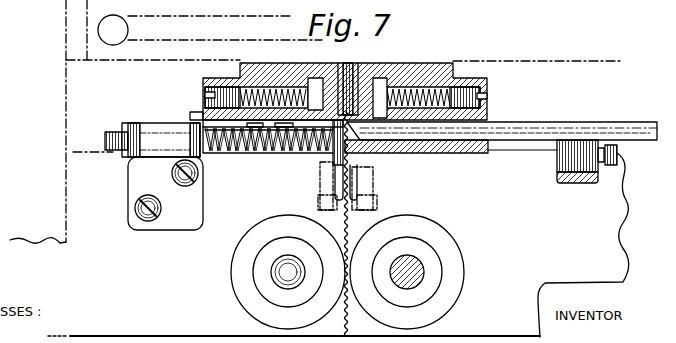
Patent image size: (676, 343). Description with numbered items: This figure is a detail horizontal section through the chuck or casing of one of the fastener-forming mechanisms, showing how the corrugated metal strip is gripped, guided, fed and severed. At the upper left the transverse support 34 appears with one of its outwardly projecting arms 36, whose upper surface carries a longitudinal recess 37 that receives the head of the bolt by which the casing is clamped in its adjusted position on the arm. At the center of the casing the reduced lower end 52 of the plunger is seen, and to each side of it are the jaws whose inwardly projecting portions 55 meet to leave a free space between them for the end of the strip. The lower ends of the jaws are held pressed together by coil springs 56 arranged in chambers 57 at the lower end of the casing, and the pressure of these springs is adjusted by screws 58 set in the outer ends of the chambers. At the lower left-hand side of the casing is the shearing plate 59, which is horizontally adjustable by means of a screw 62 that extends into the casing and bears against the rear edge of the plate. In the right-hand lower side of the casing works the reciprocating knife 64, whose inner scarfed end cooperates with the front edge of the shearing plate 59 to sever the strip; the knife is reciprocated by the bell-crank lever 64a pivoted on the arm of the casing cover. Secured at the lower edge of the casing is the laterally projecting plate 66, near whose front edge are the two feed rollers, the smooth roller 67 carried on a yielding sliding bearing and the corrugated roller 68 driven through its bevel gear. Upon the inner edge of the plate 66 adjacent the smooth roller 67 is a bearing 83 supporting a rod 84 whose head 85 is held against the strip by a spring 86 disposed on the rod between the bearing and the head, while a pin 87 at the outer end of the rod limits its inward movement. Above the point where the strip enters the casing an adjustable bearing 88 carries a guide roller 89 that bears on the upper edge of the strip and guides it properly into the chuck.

The transverse support 34 is at (38, 121).
The outwardly projecting arm 36 is at (159, 53).
The longitudinal recess 37 is at (210, 30).
The reduced lower end 52 is at (358, 62).
The inwardly projecting portion 55 is at (343, 62).
The coil spring 56 is at (258, 62).
The chamber 57 is at (273, 90).
The adjusting screw 58 is at (204, 93).
The shearing plate 59 is at (240, 155).
The adjusting screw 62 is at (190, 117).
The reciprocating knife 64 is at (548, 122).
The bell-crank lever 64a is at (559, 185).
The laterally projecting plate 66 is at (294, 321).
The smooth feed roller 67 is at (242, 285).
The corrugated feed roller 68 is at (460, 243).
The bearing 83 is at (162, 176).
The rod 84 is at (287, 157).
The head 85 is at (322, 168).
The spring 86 is at (260, 155).
The pin 87 is at (122, 133).
The adjustable bearing 88 is at (374, 172).
The guide roller 89 is at (378, 208).